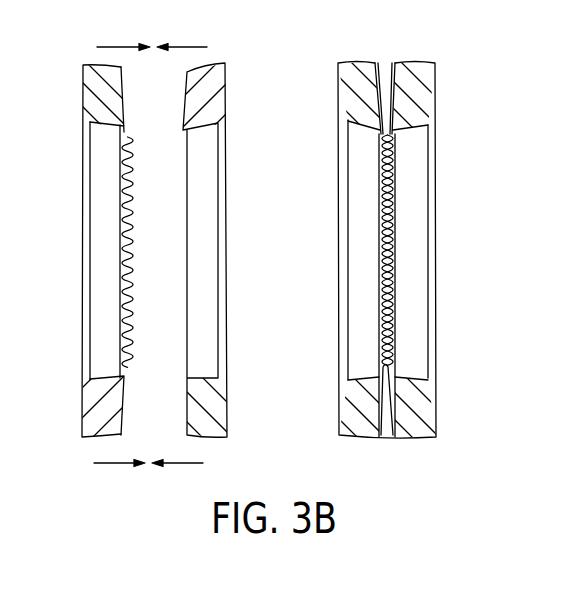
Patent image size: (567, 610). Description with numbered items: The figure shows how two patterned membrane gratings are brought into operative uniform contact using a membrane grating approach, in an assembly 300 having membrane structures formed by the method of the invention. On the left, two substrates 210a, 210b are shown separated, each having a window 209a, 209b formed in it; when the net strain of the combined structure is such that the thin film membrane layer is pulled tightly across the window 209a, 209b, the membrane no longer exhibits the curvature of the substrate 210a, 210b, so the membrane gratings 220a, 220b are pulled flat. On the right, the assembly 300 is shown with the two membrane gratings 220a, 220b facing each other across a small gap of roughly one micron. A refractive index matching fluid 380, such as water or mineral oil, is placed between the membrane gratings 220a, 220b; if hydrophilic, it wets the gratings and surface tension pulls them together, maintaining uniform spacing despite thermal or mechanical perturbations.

The assembly 300 is at (406, 231).
The window 209a is at (193, 182).
The window 209b is at (93, 250).
The substrate 210a is at (415, 78).
The substrate 210b is at (97, 95).
The membrane grating 220a is at (392, 328).
The membrane grating 220b is at (122, 343).
The refractive index matching fluid 380 is at (397, 181).